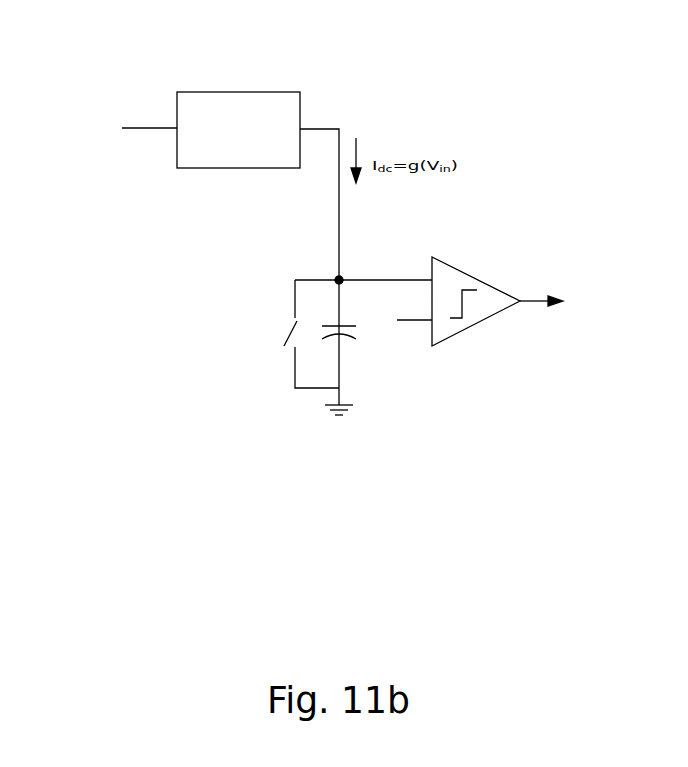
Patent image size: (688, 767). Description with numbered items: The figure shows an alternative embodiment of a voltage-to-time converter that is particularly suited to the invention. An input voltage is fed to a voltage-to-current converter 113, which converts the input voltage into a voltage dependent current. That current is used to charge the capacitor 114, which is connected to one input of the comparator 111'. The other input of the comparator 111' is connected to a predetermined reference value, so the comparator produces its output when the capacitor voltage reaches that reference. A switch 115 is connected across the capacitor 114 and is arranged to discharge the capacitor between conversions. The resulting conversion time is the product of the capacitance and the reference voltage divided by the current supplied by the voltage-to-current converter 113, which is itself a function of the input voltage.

The voltage-to-current converter 113 is at (195, 90).
The capacitor 114 is at (330, 315).
The switch 115 is at (280, 327).
The comparator 111' is at (486, 207).